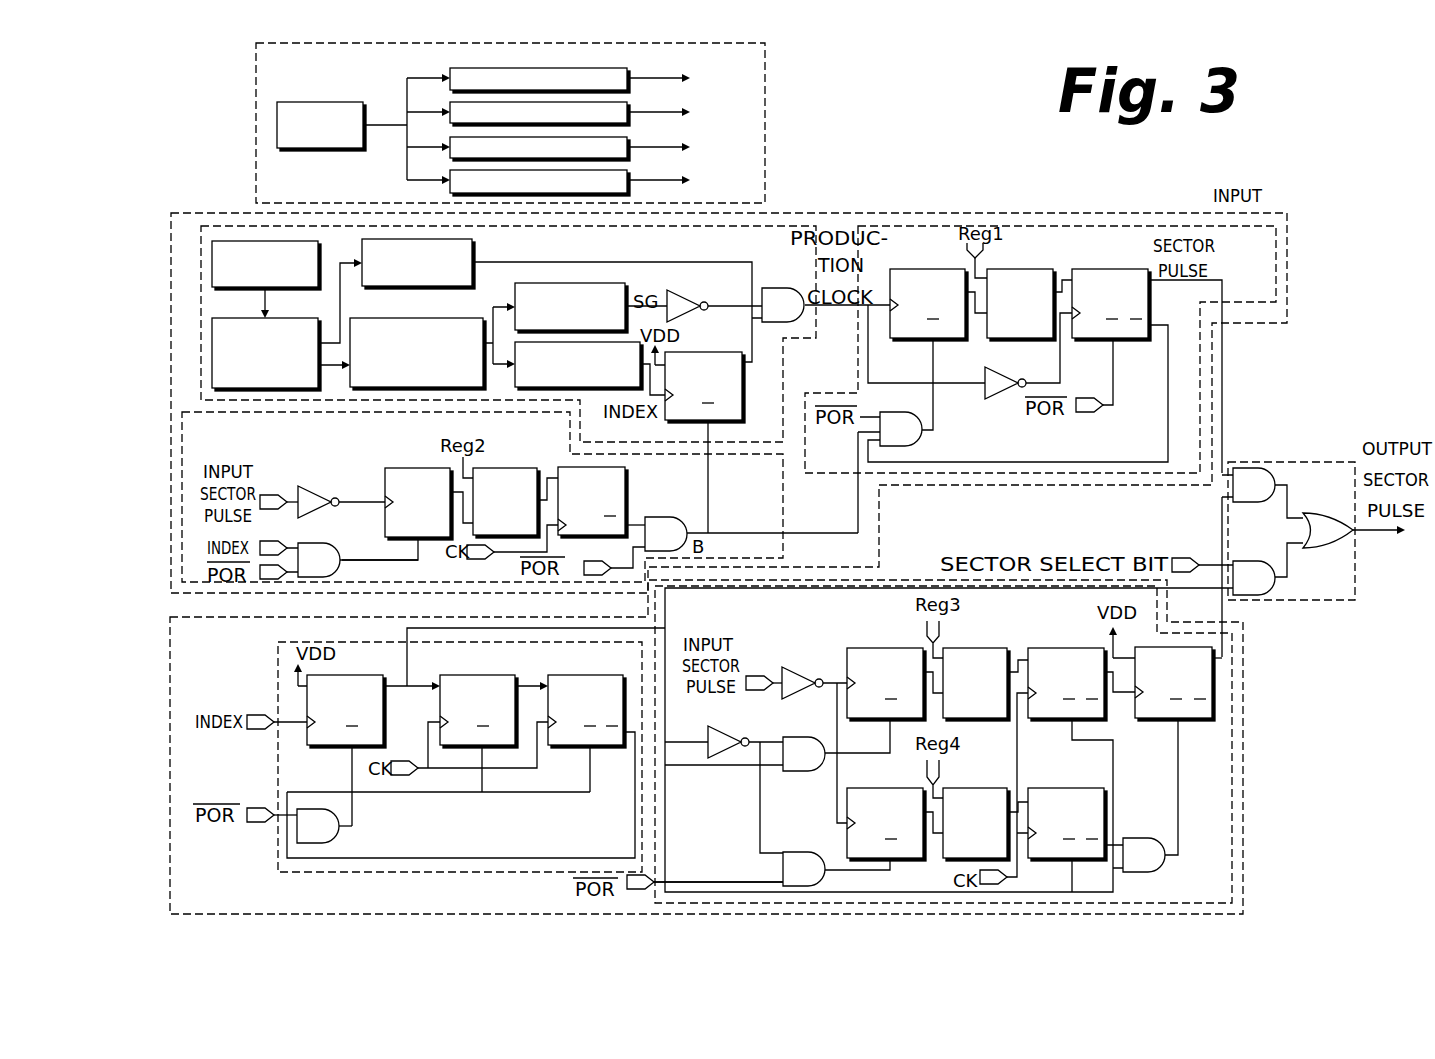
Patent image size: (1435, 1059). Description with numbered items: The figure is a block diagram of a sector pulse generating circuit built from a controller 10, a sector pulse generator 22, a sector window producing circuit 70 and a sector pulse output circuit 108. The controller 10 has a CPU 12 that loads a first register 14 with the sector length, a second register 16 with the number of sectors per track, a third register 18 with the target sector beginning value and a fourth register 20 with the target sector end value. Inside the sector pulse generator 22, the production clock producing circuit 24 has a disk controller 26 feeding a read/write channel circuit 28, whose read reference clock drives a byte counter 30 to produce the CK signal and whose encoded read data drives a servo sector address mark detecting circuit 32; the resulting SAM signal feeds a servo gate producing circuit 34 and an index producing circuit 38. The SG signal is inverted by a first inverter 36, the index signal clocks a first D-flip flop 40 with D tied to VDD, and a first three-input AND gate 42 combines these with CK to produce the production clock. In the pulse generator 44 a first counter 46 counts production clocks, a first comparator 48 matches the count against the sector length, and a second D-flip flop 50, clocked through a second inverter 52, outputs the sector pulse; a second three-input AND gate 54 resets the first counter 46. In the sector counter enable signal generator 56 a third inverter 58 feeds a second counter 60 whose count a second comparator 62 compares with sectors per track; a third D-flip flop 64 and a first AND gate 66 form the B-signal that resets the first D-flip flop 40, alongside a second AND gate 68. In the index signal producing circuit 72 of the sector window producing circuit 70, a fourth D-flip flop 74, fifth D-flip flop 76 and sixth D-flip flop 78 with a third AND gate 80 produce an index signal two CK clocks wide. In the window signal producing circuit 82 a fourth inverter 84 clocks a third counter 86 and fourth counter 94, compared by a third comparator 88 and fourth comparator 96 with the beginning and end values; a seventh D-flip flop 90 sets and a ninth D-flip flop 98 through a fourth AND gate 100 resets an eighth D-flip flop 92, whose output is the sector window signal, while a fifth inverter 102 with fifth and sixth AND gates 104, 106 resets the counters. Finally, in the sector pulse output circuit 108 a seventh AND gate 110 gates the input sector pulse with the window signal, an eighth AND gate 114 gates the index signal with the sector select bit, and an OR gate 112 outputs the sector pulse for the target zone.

The controller 10 is at (765, 120).
The central processing unit 12 is at (322, 102).
The first register 14 is at (627, 69).
The second register 16 is at (627, 103).
The third register 18 is at (627, 138).
The fourth register 20 is at (627, 172).
The sector pulse generator 22 is at (911, 213).
The production clock producing circuit 24 is at (783, 363).
The disk controller 26 is at (250, 287).
The read/write channel circuit 28 is at (290, 318).
The byte counter 30 is at (392, 287).
The servo sector address mark detecting circuit 32 is at (432, 318).
The servo gate producing circuit 34 is at (560, 283).
The first inverter 36 is at (688, 295).
The index producing circuit 38 is at (515, 383).
The first D-flip flop 40 is at (742, 398).
The first three-input AND gate 42 is at (784, 288).
The pulse generator 44 is at (972, 226).
The first counter 46 is at (920, 269).
The first comparator 48 is at (1025, 269).
The second D-flip flop 50 is at (1100, 269).
The second inverter 52 is at (1000, 372).
The second three-input AND gate 54 is at (890, 412).
The sector counter enable signal generator 56 is at (783, 508).
The third inverter 58 is at (313, 490).
The second counter 60 is at (405, 468).
The second comparator 62 is at (512, 468).
The third D-flip flop 64 is at (625, 476).
The first AND gate 66 is at (660, 517).
The second AND gate 68 is at (320, 543).
The sector window producing circuit 70 is at (1243, 837).
The index signal producing circuit 72 is at (278, 663).
The fourth D-flip flop 74 is at (350, 675).
The fifth D-flip flop 76 is at (478, 675).
The sixth D-flip flop 78 is at (585, 675).
The third AND gate 80 is at (339, 838).
The window signal producing circuit 82 is at (912, 586).
The fourth inverter 84 is at (800, 672).
The third counter 86 is at (878, 648).
The third comparator 88 is at (973, 648).
The seventh D-flip flop 90 is at (1058, 648).
The eighth D-flip flop 92 is at (1202, 718).
The fourth counter 94 is at (880, 788).
The fourth comparator 96 is at (983, 788).
The ninth D-flip flop 98 is at (1048, 788).
The fourth AND gate 100 is at (1135, 838).
The fifth inverter 102 is at (728, 732).
The fifth AND gate 104 is at (795, 737).
The sixth AND gate 106 is at (795, 852).
The sector pulse output circuit 108 is at (1286, 462).
The seventh AND gate 110 is at (1250, 502).
The OR gate 112 is at (1315, 510).
The eighth AND gate 114 is at (1275, 586).